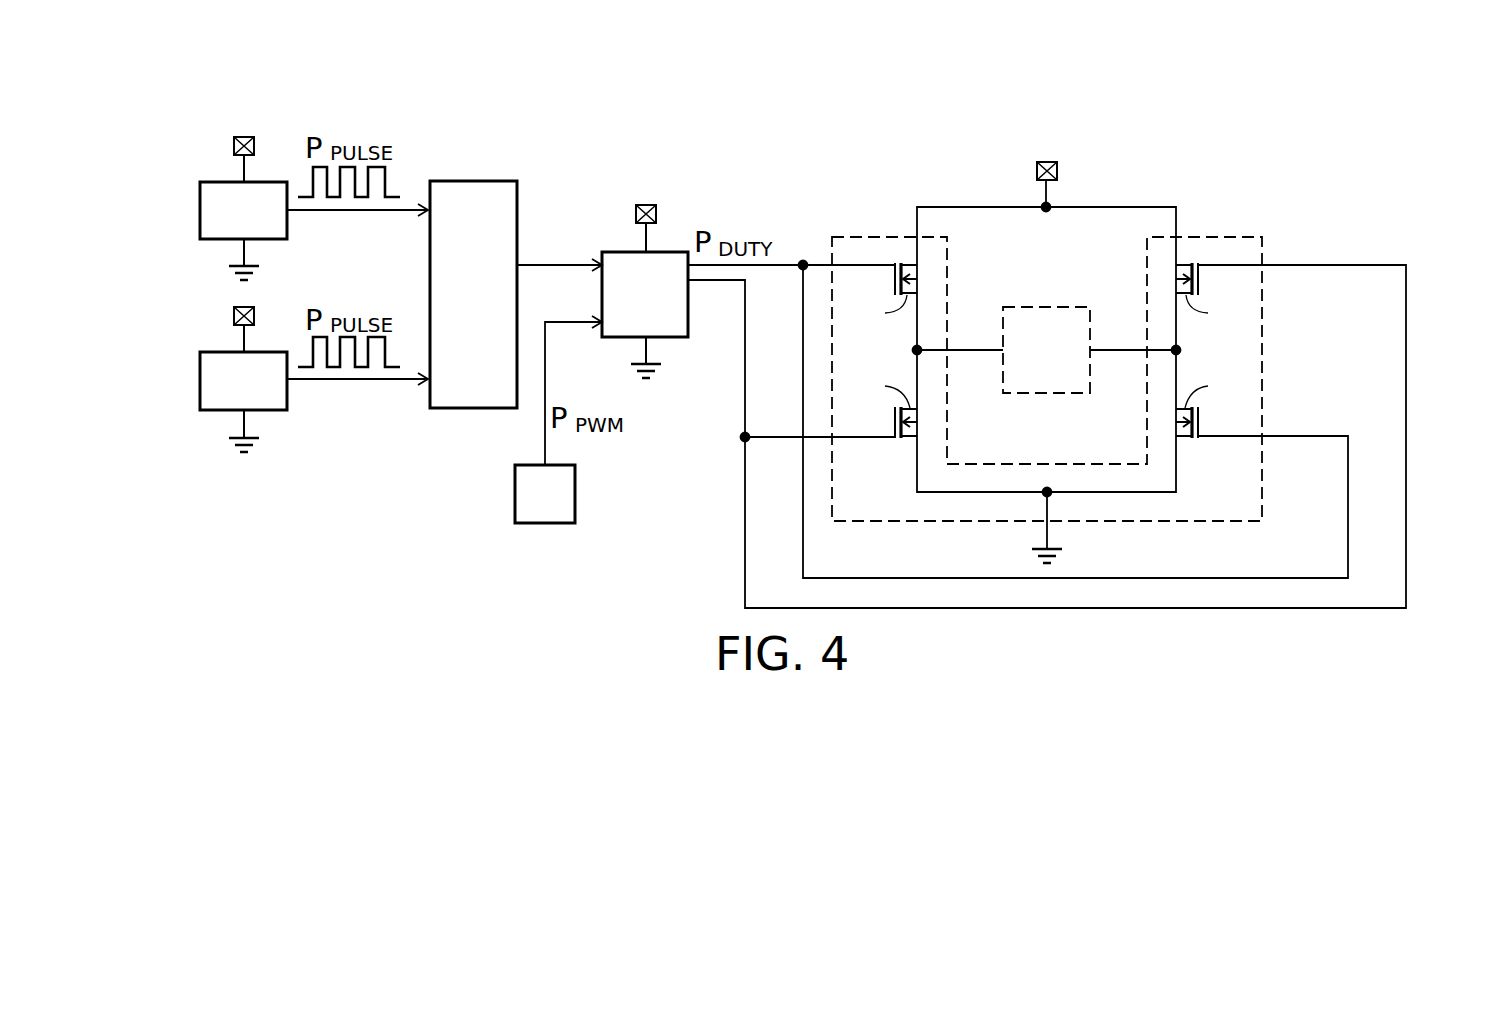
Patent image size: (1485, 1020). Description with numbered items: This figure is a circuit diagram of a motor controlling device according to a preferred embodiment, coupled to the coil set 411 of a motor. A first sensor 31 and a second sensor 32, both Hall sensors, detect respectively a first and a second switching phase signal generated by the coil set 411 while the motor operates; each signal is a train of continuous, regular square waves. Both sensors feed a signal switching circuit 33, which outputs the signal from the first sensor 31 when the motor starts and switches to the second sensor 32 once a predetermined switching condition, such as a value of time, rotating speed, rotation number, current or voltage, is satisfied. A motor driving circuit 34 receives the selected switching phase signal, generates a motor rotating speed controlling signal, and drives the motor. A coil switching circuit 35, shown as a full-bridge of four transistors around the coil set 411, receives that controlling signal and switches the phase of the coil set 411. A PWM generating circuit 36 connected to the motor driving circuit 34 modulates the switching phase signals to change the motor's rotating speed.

The first sensor 31 is at (222, 182).
The second sensor 32 is at (220, 352).
The signal switching circuit 33 is at (488, 181).
The motor driving circuit 34 is at (672, 252).
The coil switching circuit 35 is at (1245, 237).
The PWM generating circuit 36 is at (575, 488).
The coil set 411 is at (1060, 307).